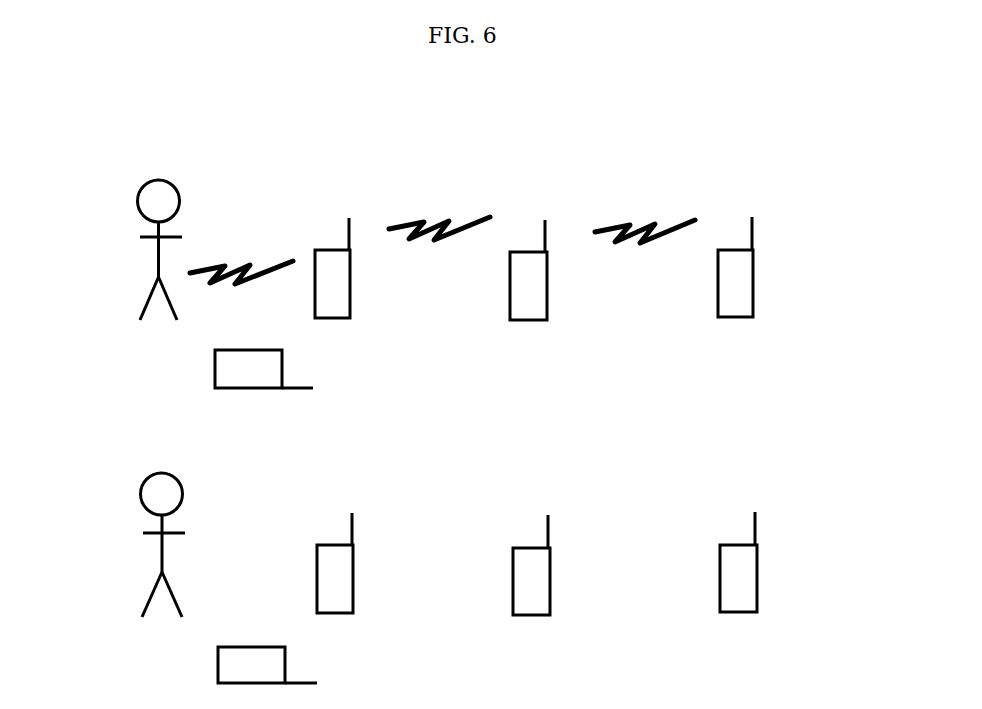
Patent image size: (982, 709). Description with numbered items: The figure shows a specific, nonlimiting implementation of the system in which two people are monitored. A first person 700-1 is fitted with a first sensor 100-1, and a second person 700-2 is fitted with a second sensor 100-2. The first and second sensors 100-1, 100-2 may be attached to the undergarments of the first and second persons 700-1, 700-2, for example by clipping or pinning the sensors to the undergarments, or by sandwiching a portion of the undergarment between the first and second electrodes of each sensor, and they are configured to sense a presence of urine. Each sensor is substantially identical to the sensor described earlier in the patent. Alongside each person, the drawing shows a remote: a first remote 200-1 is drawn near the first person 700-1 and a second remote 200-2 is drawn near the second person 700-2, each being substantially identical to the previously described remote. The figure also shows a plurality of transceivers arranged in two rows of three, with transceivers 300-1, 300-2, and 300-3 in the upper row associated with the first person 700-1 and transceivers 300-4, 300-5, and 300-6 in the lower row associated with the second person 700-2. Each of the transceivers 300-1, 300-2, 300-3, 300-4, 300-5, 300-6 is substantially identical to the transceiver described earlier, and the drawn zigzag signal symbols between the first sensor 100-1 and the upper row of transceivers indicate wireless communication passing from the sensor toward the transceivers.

The first sensor 100-1 is at (176, 246).
The second sensor 100-2 is at (174, 542).
The first remote 200-1 is at (214, 371).
The second remote 200-2 is at (218, 667).
The transceiver 300-1 is at (350, 282).
The transceiver 300-2 is at (547, 292).
The transceiver 300-3 is at (753, 288).
The transceiver 300-4 is at (353, 577).
The transceiver 300-5 is at (550, 587).
The transceiver 300-6 is at (757, 582).
The first person 700-1 is at (196, 198).
The second person 700-2 is at (199, 492).